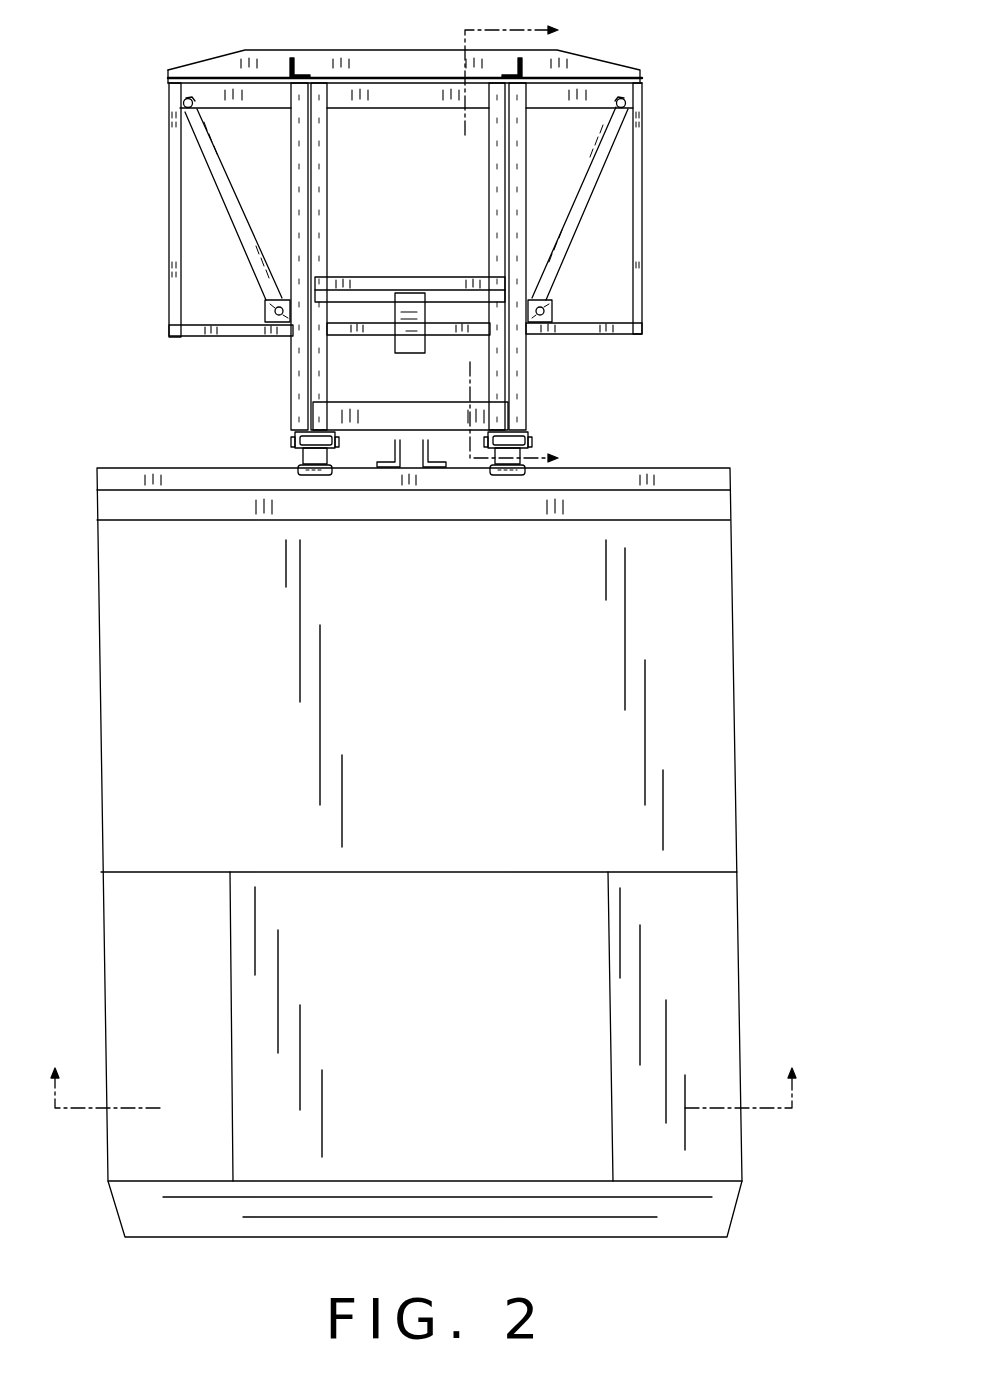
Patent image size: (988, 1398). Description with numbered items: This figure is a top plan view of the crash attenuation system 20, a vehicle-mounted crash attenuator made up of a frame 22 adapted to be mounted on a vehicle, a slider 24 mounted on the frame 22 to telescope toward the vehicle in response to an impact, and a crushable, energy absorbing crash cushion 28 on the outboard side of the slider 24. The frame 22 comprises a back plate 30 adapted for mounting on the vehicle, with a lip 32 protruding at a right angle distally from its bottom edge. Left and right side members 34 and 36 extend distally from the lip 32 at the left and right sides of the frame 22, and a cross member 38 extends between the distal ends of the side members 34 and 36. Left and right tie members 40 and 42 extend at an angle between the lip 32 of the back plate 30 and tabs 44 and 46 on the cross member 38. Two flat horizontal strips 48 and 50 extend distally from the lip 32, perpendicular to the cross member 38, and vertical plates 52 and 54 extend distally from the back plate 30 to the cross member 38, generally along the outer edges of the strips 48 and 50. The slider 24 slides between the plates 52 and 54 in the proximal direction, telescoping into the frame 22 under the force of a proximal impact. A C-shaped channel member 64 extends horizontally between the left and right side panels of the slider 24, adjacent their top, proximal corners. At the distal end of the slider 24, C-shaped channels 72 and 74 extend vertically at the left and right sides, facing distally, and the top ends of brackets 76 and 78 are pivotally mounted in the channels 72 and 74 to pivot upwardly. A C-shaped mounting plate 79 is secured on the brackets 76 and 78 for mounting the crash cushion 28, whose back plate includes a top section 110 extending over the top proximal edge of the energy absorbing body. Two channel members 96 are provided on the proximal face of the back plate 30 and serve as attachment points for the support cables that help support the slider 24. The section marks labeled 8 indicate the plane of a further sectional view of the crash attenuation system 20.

The section line 8- 8 is at (423, 563).
The display assembly 20 is at (670, 382).
The frame 22 is at (660, 213).
The slider 24 is at (540, 368).
The crash cushion 28 is at (757, 799).
The back plate 30 is at (627, 93).
The lip 32 is at (557, 92).
The left side member 34 is at (170, 243).
The right side member 36 is at (647, 248).
The cross member 38 is at (210, 337).
The left tie member 40 is at (215, 170).
The right tie member 42 is at (592, 183).
The tab 44 is at (264, 310).
The tab 46 is at (553, 311).
The flat horizontal strip 48 is at (317, 127).
The flat horizontal strip 50 is at (493, 133).
The vertical plate 52 is at (313, 158).
The vertical plate 54 is at (500, 159).
The C-shaped channel member 64 is at (420, 283).
The C-shaped channel 72 is at (294, 431).
The C-shaped channel 74 is at (531, 431).
The bracket 76 is at (300, 460).
The bracket 78 is at (531, 453).
The C-shaped mounting plate 79 is at (720, 478).
The channel member 96 is at (290, 62).
The top section 110 is at (700, 507).